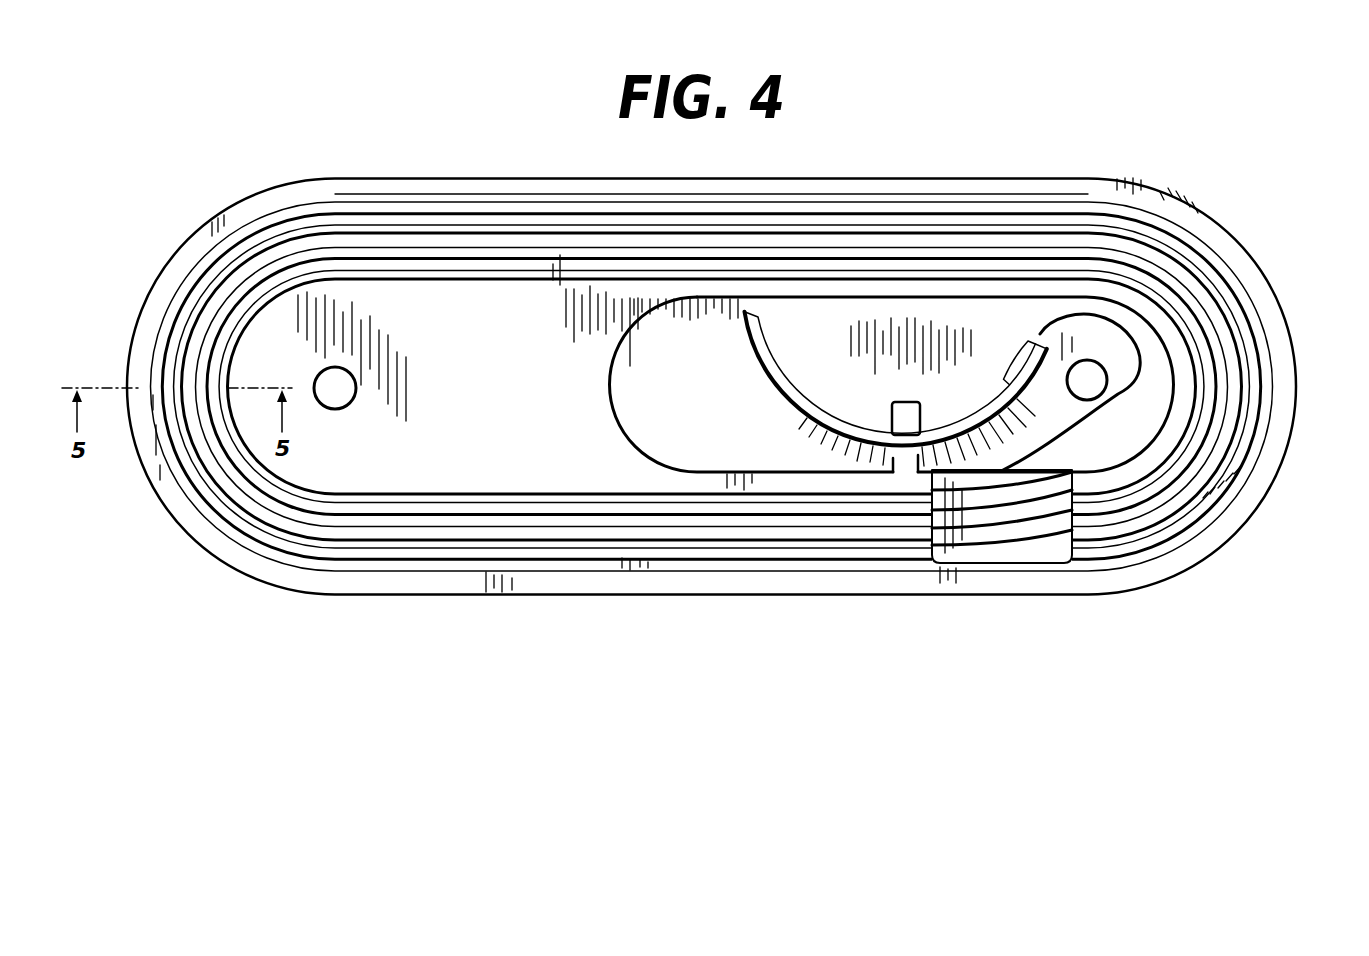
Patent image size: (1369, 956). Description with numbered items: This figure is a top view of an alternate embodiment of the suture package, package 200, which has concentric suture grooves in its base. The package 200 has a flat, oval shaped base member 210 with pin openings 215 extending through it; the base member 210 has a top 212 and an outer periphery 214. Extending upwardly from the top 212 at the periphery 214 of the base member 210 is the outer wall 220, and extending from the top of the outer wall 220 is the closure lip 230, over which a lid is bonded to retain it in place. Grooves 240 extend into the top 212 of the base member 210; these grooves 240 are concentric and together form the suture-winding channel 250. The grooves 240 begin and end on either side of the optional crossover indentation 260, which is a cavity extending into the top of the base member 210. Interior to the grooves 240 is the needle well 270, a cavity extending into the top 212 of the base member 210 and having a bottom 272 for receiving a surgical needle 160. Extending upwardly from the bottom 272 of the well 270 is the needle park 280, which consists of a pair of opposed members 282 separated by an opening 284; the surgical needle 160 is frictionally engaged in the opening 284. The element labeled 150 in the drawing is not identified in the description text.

The ramp / step portion 150 is at (977, 547).
The surgical needle 160 is at (753, 360).
The package 200 is at (1238, 153).
The base member 210 is at (513, 336).
The top 212 is at (495, 478).
The outer periphery 214 is at (1242, 520).
The pin openings 215 is at (323, 380).
The outer wall 220 is at (658, 565).
The closure lip 230 is at (768, 578).
The grooves 240 is at (1117, 210).
The suture-winding channel 250 is at (326, 565).
The crossover indentation 260 is at (1050, 547).
The needle well 270 is at (610, 409).
The bottom 272 is at (812, 340).
The needle park 280 is at (826, 461).
The opposed members 282 is at (904, 416).
The opening 284 is at (892, 447).